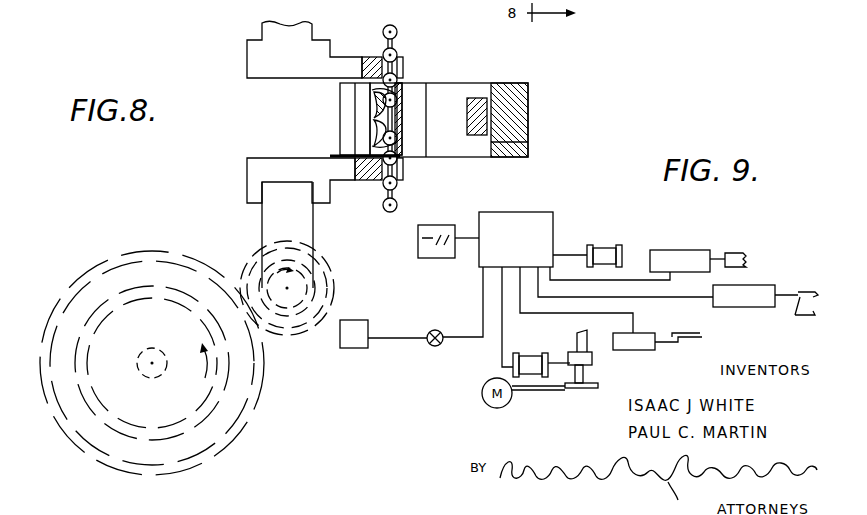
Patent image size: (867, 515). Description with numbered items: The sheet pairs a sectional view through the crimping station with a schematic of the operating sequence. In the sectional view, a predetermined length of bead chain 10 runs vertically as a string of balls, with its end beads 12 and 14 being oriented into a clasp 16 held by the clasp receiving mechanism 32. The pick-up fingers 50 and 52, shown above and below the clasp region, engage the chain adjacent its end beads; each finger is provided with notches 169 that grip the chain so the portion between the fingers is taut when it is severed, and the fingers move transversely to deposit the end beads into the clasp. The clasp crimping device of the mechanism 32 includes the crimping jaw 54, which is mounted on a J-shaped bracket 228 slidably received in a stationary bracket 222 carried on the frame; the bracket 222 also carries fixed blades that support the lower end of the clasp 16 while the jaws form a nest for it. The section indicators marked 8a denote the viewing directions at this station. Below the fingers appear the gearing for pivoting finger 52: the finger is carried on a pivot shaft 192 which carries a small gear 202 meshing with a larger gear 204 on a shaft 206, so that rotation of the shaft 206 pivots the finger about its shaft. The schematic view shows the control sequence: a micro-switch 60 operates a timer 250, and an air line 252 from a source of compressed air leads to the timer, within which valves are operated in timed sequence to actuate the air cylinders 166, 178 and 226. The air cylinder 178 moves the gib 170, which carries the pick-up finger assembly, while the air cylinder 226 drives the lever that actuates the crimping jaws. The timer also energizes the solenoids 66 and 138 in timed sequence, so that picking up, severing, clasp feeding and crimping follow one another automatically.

In FIG. 8, the bead chain 10 is at (383, 210).
In FIG. 8, the end bead 12 is at (405, 110).
In FIG. 8, the end bead 14 is at (410, 132).
In FIG. 8, the clasp 16 is at (407, 107).
In FIG. 8, the clasp receiving mechanism 32 is at (456, 79).
In FIG. 8, the pick-up finger 50 is at (364, 57).
In FIG. 8, the pick-up finger 52 is at (315, 157).
In FIG. 8, the crimping jaw 54 is at (340, 98).
In FIG. 9, the micro-switch 60 is at (440, 225).
In FIG. 9, the solenoid 66 is at (618, 247).
In FIG. 9, the solenoid 138 is at (527, 355).
In FIG. 9, the air cylinder 166 is at (640, 350).
In FIG. 8, the notches 169 is at (405, 60).
In FIG. 9, the gib 170 is at (735, 252).
In FIG. 9, the air cylinder 178 is at (688, 250).
In FIG. 8, the pivot shaft 192 is at (313, 285).
In FIG. 8, the small gear 202 is at (327, 258).
In FIG. 8, the gear 204 is at (263, 392).
In FIG. 8, the shaft 206 is at (152, 347).
In FIG. 8, the bracket 222 is at (530, 88).
In FIG. 9, the air cylinder 226 is at (748, 285).
In FIG. 8, the J-shaped bracket 228 is at (478, 132).
In FIG. 9, the timer 250 is at (555, 226).
In FIG. 9, the air line 252 is at (455, 343).
In FIG. 8, the section line indicator 8a is at (422, 160).